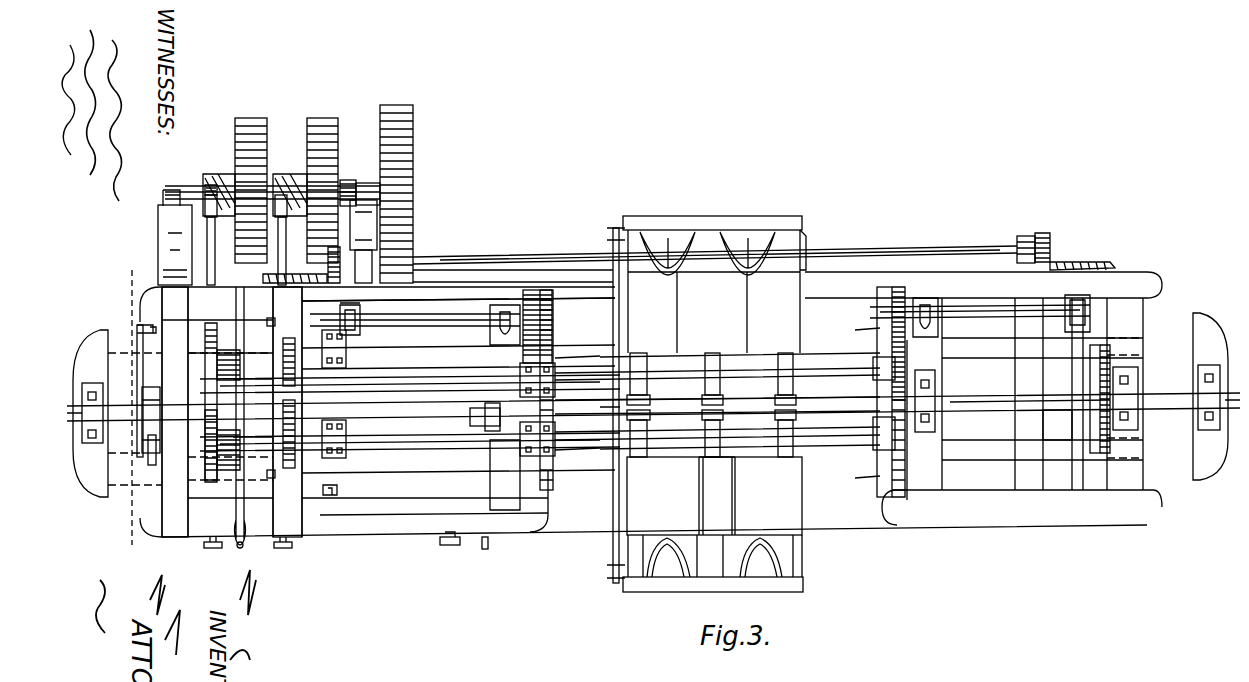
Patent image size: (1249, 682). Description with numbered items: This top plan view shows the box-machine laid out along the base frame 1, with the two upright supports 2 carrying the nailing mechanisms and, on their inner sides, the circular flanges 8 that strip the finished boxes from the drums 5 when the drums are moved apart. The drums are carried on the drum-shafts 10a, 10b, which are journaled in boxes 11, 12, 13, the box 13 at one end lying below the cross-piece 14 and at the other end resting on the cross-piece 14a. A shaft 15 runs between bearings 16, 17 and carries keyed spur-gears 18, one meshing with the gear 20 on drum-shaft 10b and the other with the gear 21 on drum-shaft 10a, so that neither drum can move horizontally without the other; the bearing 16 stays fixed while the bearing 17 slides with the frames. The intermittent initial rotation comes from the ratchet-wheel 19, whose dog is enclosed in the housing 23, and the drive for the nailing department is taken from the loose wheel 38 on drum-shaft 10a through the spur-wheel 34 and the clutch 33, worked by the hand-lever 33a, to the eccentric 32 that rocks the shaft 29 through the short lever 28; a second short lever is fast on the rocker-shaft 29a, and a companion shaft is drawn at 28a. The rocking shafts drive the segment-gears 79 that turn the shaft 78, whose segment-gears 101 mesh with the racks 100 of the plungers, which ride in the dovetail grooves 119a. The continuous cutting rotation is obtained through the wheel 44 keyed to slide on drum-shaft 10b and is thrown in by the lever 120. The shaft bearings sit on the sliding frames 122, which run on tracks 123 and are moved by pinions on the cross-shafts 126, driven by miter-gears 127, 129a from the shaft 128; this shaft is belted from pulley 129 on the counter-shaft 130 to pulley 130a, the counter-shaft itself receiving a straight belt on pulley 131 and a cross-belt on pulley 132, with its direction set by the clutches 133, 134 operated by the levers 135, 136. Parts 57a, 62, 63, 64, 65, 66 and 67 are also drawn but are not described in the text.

The frame 1 is at (635, 407).
The upright supports 2 is at (876, 484).
The drums 5 is at (740, 398).
The circular flange 8 is at (580, 478).
The drum-shaft 10a is at (653, 406).
The drum-shaft 10b is at (1030, 389).
The box 11 is at (928, 432).
The box 12 is at (1198, 386).
The box 13 is at (1130, 385).
The cross-piece 14 is at (175, 412).
The cross-piece 14a is at (1125, 394).
The shaft 15 is at (992, 316).
The bearing 16 is at (1073, 290).
The bearing 17 is at (928, 310).
The spur-gear 18 is at (890, 288).
The ratchet-wheel 19 is at (142, 425).
The gear 20 is at (930, 365).
The gear 21 is at (504, 475).
The housing 23 is at (145, 450).
The lever 28 is at (325, 362).
The shaft 28a is at (330, 490).
The shaft 29 is at (386, 394).
The rocker-shaft 29a is at (400, 458).
The eccentric 32 is at (283, 483).
The clutch 33 is at (228, 483).
The hand-lever 33a is at (240, 556).
The spur-wheel 34 is at (207, 480).
The wheel 38 is at (203, 445).
The wheel 44 is at (1090, 370).
The stud 57a is at (485, 550).
The housing 62 is at (763, 488).
The arch 63 is at (718, 529).
The partition 64 is at (717, 484).
The column 65 is at (719, 252).
The column 66 is at (737, 253).
The arch rib 67 is at (735, 242).
The shaft 78 is at (596, 462).
The segment-gears 79 is at (556, 458).
The racks 100 is at (740, 412).
The segment-gears 101 is at (788, 462).
The grooves 119a is at (656, 405).
The lever 120 is at (440, 547).
The sliding frames 122 is at (648, 425).
The tracks 123 is at (657, 398).
The cross-shafts 126 is at (1058, 425).
The miter-gear 127 is at (1090, 262).
The shaft 128 is at (873, 248).
The pulley 129 is at (413, 167).
The miter-gear 129a is at (1042, 233).
The counter-shaft 130 is at (348, 182).
The pulley 130a is at (513, 257).
The pulley 131 is at (262, 148).
The pulley 132 is at (335, 146).
The clutch 133 is at (222, 172).
The clutch 134 is at (280, 182).
The lever 135 is at (212, 548).
The lever 136 is at (282, 548).